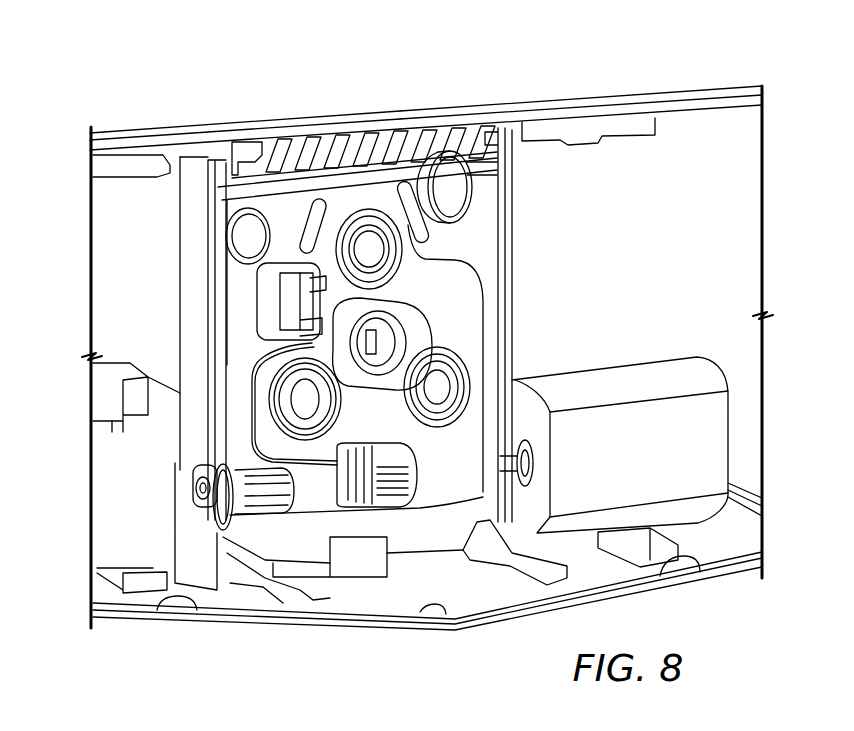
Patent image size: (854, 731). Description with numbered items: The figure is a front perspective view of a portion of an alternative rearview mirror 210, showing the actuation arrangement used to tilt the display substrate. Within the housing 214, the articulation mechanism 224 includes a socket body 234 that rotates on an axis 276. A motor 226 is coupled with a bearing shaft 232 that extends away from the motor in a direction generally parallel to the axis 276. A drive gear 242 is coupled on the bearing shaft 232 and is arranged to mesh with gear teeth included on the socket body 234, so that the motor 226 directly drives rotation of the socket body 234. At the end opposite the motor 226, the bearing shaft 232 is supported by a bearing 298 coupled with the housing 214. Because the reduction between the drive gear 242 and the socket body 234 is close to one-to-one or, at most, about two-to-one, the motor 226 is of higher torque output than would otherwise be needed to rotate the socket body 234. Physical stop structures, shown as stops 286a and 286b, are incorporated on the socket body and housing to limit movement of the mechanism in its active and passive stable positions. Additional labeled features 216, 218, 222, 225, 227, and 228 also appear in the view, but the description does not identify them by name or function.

The rearview mirror 210 is at (603, 58).
The housing 214 is at (130, 137).
The second housing portion 216 is at (702, 271).
The top rail 218 is at (706, 98).
The gearbox housing 222 is at (222, 161).
The articulation mechanism 224 is at (568, 357).
The cylindrical boss 225 is at (400, 217).
The motor 226 is at (478, 207).
The gear 227 is at (340, 497).
The drive shaft assembly 228 is at (247, 509).
The bearing shaft 232 is at (510, 468).
The socket body 234 is at (320, 500).
The drive gear 242 is at (402, 453).
The axis 276 is at (232, 515).
The stop 286a is at (365, 565).
The stop 286b is at (362, 563).
The bearing 298 is at (203, 503).